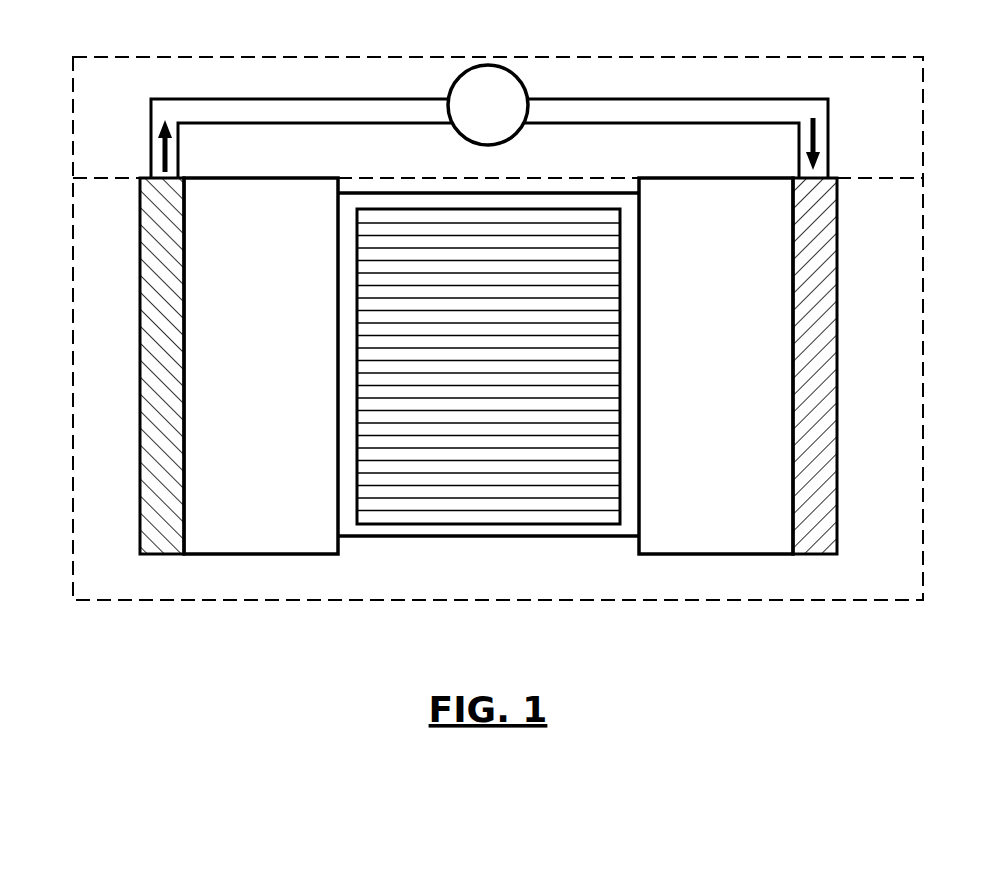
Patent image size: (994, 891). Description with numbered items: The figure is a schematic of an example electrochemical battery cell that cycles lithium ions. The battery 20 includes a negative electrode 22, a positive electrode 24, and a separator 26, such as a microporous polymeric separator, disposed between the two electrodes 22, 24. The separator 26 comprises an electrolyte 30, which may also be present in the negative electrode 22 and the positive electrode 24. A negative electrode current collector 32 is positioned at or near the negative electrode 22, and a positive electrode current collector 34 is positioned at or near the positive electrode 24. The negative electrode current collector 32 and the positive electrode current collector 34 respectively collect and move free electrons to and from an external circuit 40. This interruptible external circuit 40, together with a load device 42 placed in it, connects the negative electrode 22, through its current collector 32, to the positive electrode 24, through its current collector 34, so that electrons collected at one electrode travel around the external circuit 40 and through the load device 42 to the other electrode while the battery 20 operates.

The battery 20 is at (68, 220).
The negative electrode 22 is at (261, 366).
The positive electrode 24 is at (716, 366).
The separator 26 is at (490, 538).
The electrolyte 30 is at (488, 366).
The negative electrode current collector 32 is at (141, 262).
The positive electrode current collector 34 is at (839, 256).
The external circuit 40 is at (310, 50).
The load device 42 is at (488, 105).